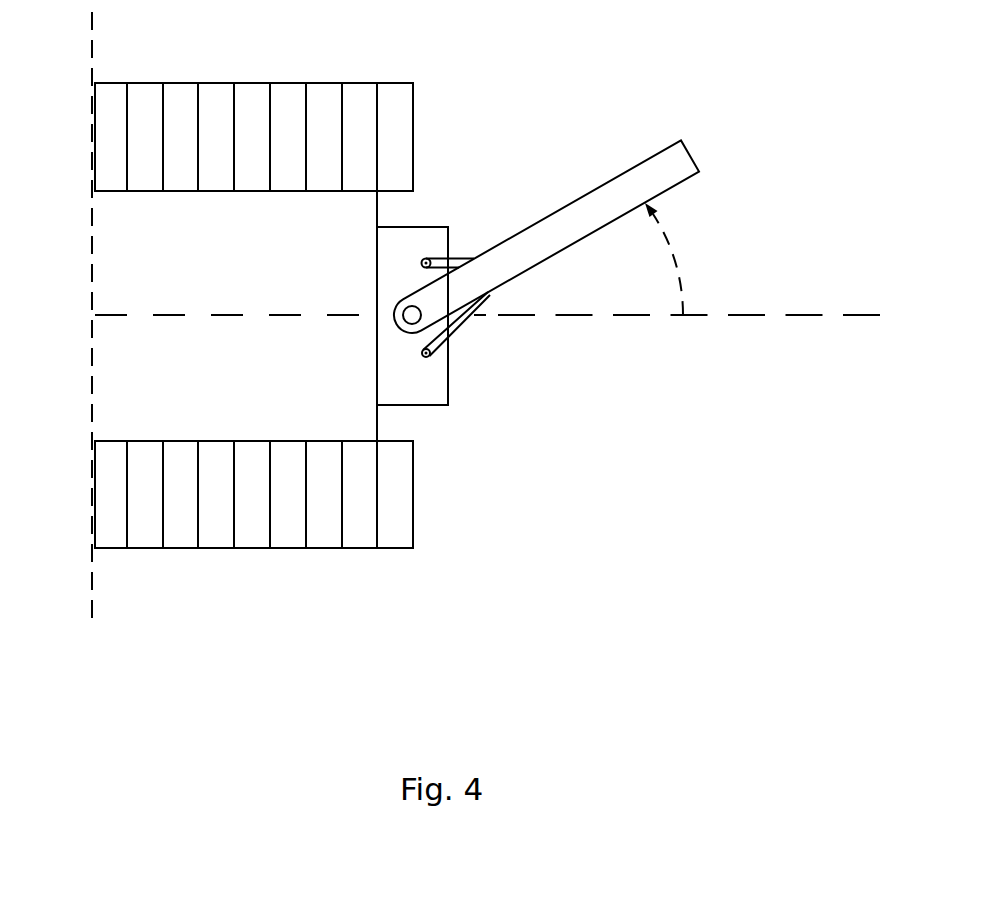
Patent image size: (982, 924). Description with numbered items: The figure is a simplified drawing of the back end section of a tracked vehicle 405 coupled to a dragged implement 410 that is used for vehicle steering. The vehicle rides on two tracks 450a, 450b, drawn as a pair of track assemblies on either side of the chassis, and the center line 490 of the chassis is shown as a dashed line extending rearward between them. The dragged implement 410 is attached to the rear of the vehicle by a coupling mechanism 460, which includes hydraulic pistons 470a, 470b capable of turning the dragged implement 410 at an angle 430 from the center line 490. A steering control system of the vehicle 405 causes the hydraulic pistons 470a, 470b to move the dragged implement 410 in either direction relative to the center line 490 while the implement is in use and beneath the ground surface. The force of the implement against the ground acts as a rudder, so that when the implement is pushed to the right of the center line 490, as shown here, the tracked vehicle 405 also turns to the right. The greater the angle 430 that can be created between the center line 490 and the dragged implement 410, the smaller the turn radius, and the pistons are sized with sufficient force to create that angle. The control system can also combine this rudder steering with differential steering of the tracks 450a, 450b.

The tracked vehicle 405 is at (131, 262).
The dragged implement 410 is at (588, 193).
The angle 430 is at (682, 253).
The track 450a is at (233, 83).
The track 450b is at (233, 548).
The coupling mechanism 460 is at (421, 398).
The hydraulic piston 470a is at (458, 257).
The hydraulic piston 470b is at (465, 328).
The center line 490 is at (743, 316).